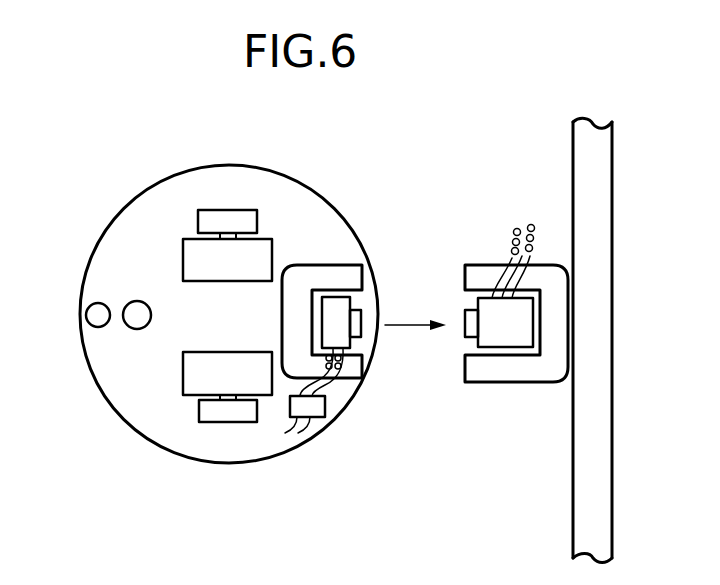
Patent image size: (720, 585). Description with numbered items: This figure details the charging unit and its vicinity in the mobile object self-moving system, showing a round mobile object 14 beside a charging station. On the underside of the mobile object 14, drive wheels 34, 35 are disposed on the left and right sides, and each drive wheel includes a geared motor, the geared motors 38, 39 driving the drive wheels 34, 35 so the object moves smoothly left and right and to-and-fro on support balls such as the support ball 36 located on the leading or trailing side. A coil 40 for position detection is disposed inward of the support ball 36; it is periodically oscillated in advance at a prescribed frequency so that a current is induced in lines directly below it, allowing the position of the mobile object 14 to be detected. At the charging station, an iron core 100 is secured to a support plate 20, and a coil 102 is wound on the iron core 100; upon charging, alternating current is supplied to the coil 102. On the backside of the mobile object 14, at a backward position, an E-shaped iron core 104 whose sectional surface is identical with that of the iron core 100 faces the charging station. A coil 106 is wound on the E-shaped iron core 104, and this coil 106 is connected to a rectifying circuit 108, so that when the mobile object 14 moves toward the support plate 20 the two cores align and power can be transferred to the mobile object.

The mobile object 14 is at (66, 352).
The support plate 20 is at (600, 163).
The drive wheel 34 is at (230, 412).
The drive wheel 35 is at (232, 215).
The support ball 36 is at (97, 303).
The geared motor 38 is at (195, 380).
The geared motor 39 is at (195, 250).
The coil 40 is at (135, 301).
The iron core 100 is at (503, 368).
The coil 102 is at (492, 303).
The E-shaped iron core 104 is at (340, 272).
The coil 106 is at (336, 322).
The rectifying circuit 108 is at (322, 410).